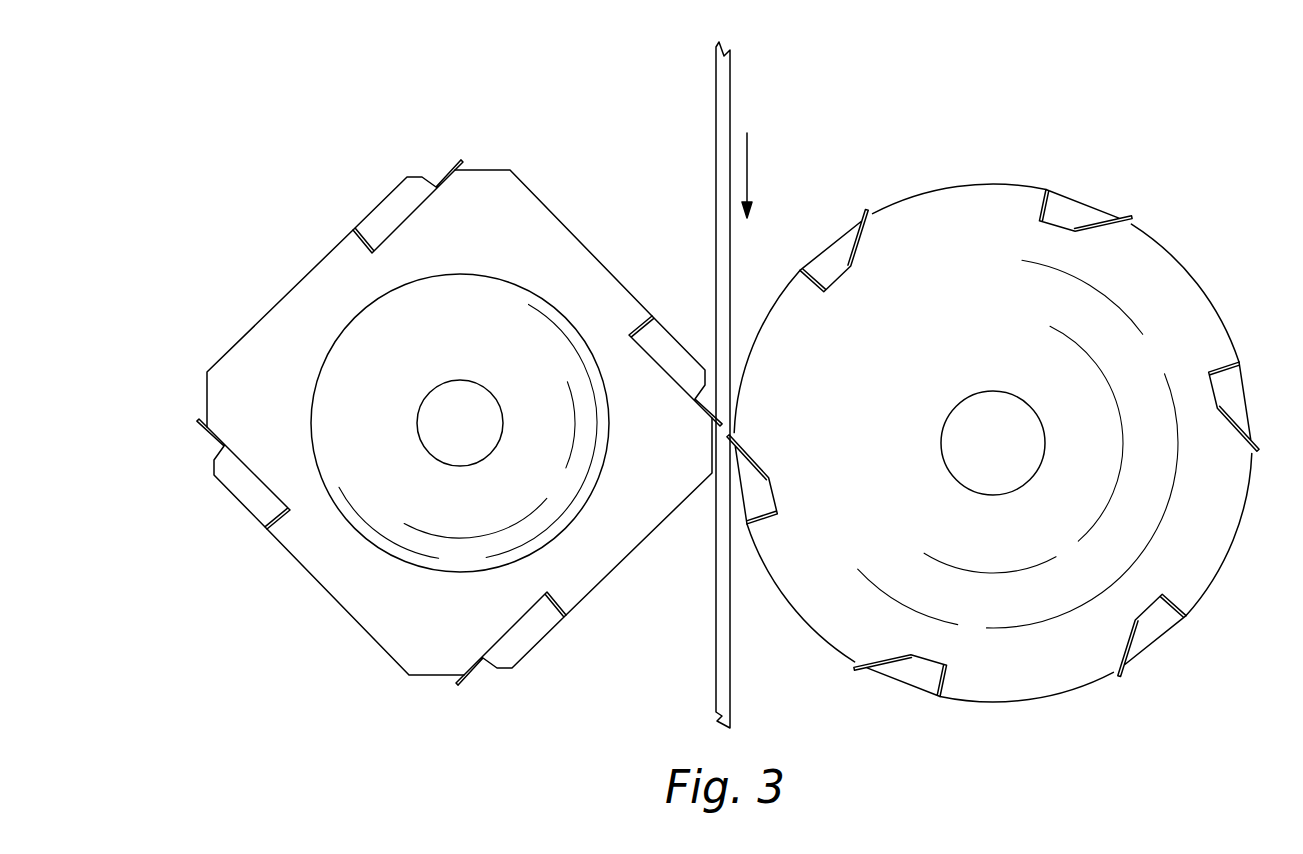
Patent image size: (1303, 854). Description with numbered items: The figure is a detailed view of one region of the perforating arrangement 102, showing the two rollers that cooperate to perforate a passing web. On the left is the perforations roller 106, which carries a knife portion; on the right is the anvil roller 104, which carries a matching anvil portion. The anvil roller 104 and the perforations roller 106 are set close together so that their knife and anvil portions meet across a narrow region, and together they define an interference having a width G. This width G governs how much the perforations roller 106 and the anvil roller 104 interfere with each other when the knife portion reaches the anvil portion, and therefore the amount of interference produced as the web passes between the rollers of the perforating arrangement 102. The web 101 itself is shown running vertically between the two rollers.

The web strip 101 is at (713, 147).
The perforating arrangement 102 is at (998, 382).
The anvil roller 104 is at (977, 262).
The perforations roller 106 is at (300, 333).
The width of the interference G is at (740, 524).